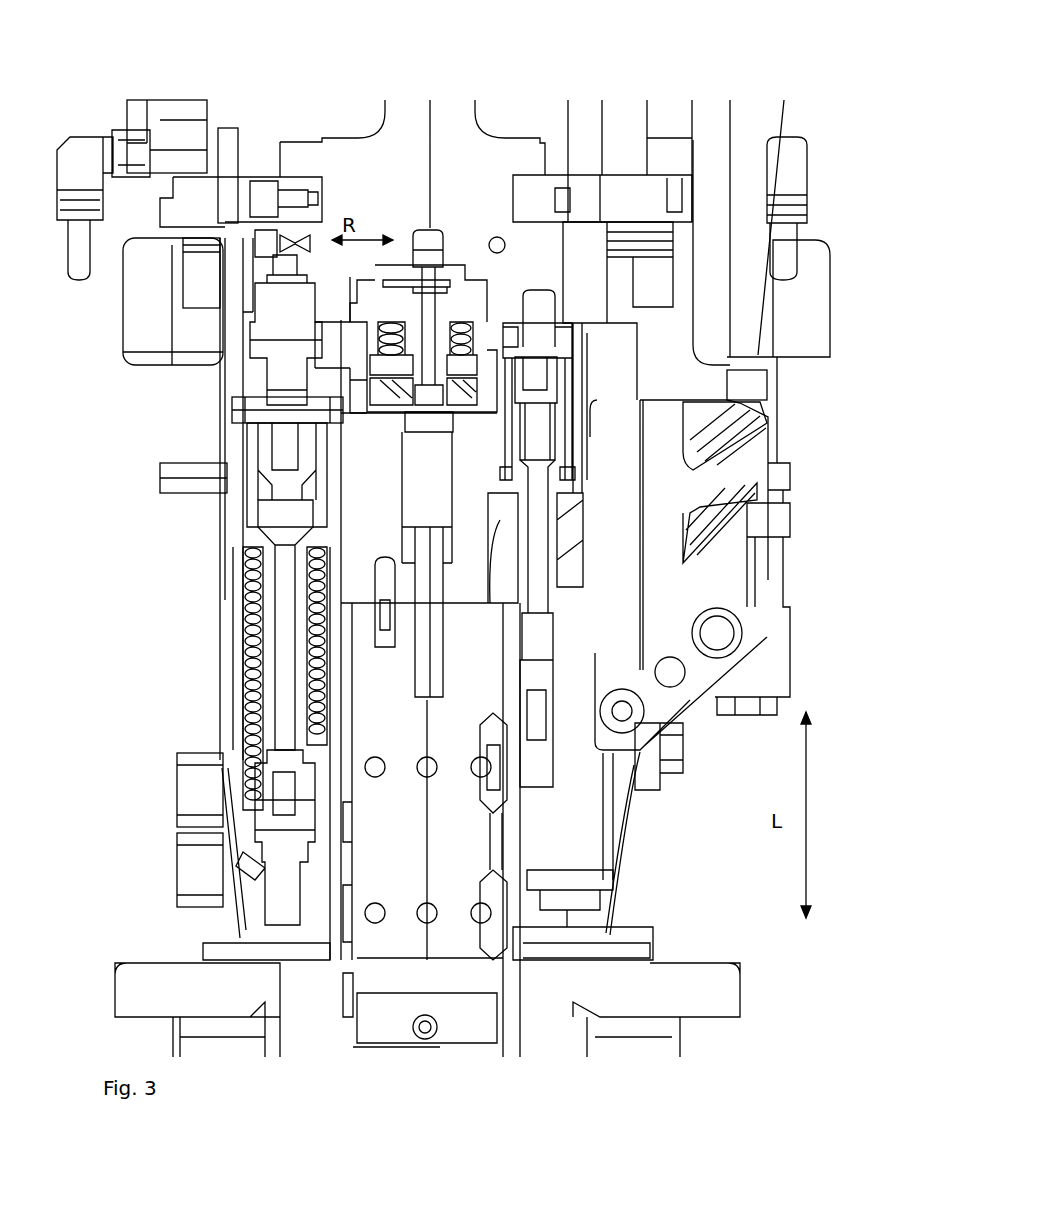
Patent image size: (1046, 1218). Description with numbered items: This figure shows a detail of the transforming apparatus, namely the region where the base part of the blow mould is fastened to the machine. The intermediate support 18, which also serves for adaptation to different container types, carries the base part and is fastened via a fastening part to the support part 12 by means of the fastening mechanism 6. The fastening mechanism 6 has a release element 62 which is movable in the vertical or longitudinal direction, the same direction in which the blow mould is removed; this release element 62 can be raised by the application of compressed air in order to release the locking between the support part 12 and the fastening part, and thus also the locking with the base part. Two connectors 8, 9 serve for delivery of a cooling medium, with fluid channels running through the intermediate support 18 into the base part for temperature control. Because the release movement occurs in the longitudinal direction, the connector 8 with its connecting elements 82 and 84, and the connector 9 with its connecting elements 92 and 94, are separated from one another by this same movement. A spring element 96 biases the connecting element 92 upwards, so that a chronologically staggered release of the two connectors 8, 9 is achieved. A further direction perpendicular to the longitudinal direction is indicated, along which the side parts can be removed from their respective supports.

The fastening mechanism 6 is at (340, 295).
The intermediate support 18 is at (363, 162).
The release element 62 is at (487, 315).
The support part 12 is at (483, 398).
The connecting element 84 is at (543, 390).
The connector 8 is at (548, 442).
The connecting element 82 is at (540, 453).
The connecting element 94 is at (283, 392).
The connector 9 is at (276, 490).
The connecting element 92 is at (283, 513).
The spring element 96 is at (317, 633).